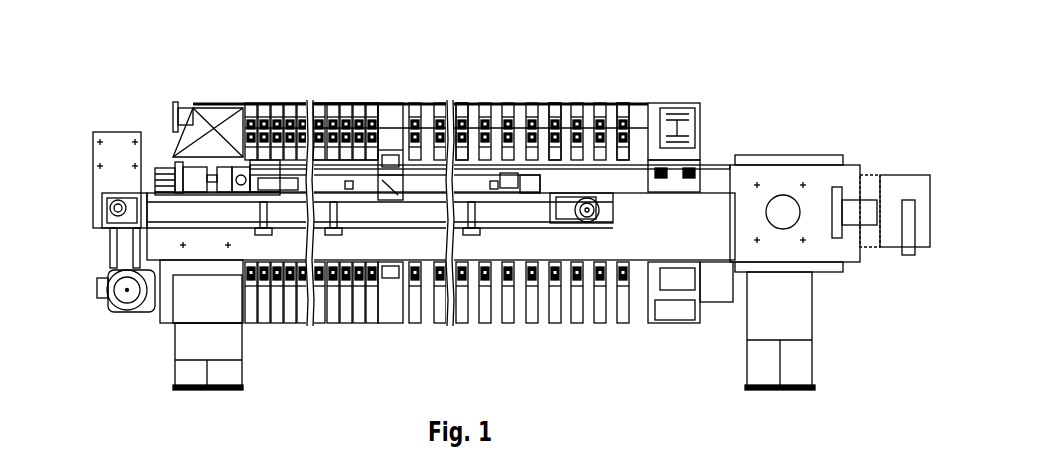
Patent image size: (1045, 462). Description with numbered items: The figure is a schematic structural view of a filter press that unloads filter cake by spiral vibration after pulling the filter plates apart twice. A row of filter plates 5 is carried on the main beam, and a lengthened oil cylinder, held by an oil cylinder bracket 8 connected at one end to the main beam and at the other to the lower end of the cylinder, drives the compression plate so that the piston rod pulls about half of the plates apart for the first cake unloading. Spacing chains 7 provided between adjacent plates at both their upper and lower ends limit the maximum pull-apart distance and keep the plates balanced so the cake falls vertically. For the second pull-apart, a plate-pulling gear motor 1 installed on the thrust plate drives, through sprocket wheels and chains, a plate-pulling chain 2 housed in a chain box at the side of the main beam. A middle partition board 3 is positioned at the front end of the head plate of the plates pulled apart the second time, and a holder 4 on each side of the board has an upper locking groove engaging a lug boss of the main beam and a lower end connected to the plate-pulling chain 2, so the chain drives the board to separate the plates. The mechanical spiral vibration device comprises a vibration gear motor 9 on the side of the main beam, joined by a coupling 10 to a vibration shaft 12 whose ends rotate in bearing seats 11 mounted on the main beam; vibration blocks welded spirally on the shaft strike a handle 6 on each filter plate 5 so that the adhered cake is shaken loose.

The plate-pulling gear motor 1 is at (105, 268).
The plate-pulling chain 2 is at (108, 190).
The middle partition board 3 is at (380, 110).
The holder 4 is at (323, 120).
The filter plate 5 is at (473, 110).
The handle 6 is at (565, 128).
The spacing chain 7 is at (633, 127).
The oil cylinder bracket 8 is at (910, 212).
The vibration gear motor 9 is at (150, 163).
The coupling 10 is at (187, 157).
The bearing seat 11 is at (238, 157).
The vibration shaft 12 is at (250, 158).